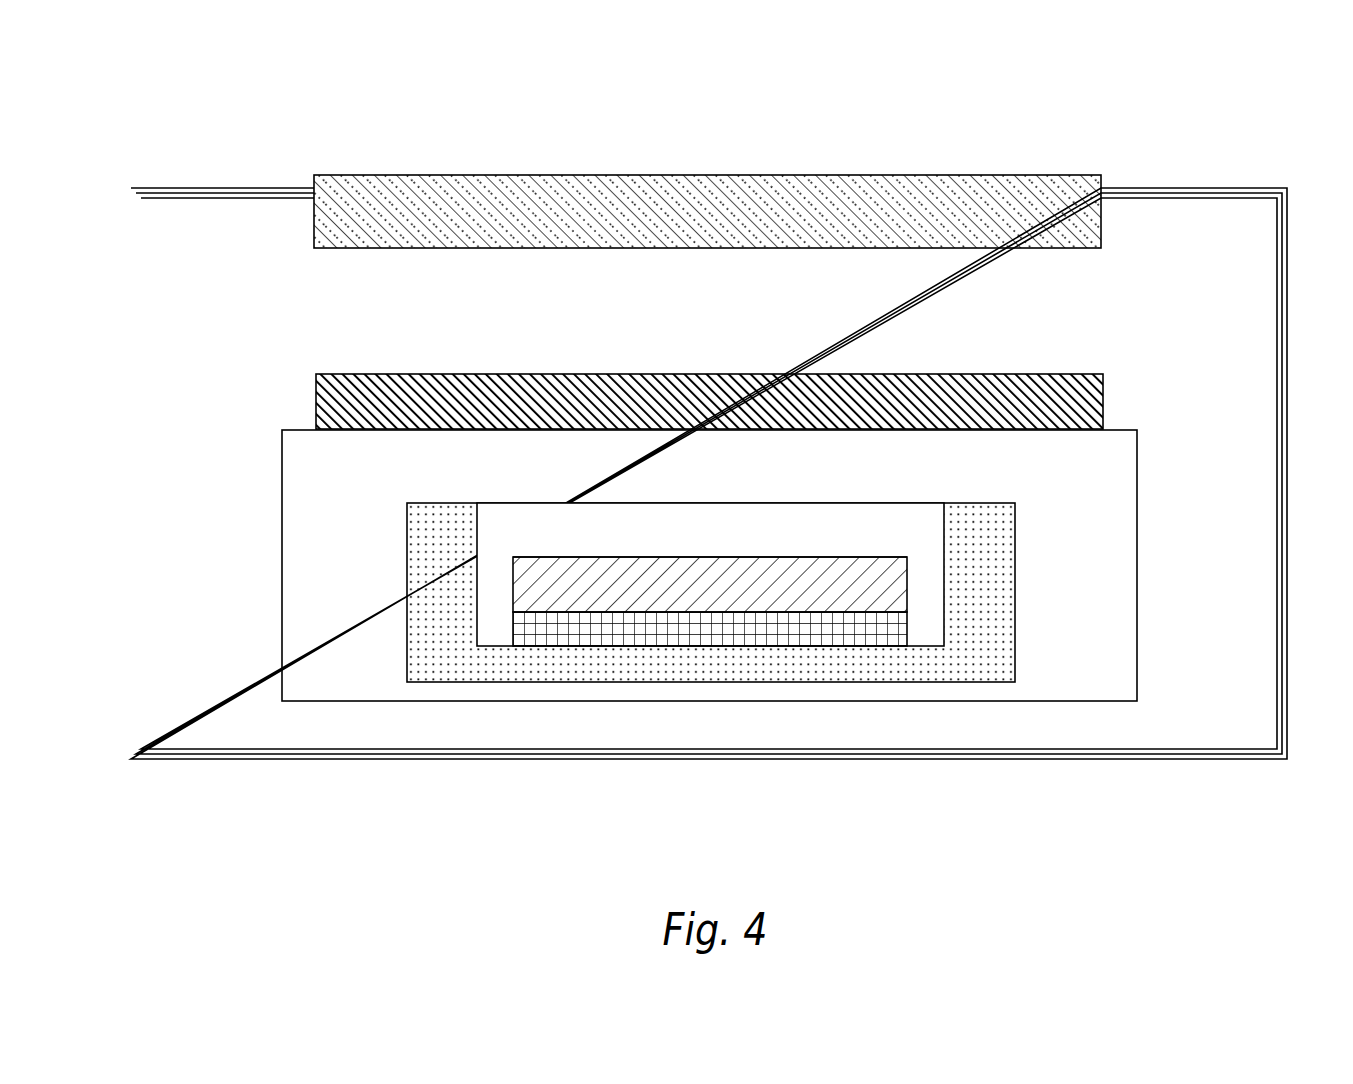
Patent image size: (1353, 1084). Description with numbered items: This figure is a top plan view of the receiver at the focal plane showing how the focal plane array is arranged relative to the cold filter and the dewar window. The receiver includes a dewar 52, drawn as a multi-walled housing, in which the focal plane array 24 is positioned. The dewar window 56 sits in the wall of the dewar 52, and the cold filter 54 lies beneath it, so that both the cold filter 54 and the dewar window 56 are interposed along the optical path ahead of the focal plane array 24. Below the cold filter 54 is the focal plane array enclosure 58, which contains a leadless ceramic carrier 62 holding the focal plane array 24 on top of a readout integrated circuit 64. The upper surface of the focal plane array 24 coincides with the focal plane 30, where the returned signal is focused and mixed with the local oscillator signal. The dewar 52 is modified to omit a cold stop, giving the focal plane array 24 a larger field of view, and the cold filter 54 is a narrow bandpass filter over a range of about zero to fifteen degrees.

The dewar 52 is at (222, 188).
The dewar window 56 is at (1043, 174).
The cold filter 54 is at (1103, 400).
The focal plane array enclosure 58 is at (280, 452).
The leadless ceramic carrier 62 is at (416, 613).
The readout integrated circuit 64 is at (518, 627).
The focal plane array 24 is at (518, 580).
The focal plane 30 is at (824, 553).